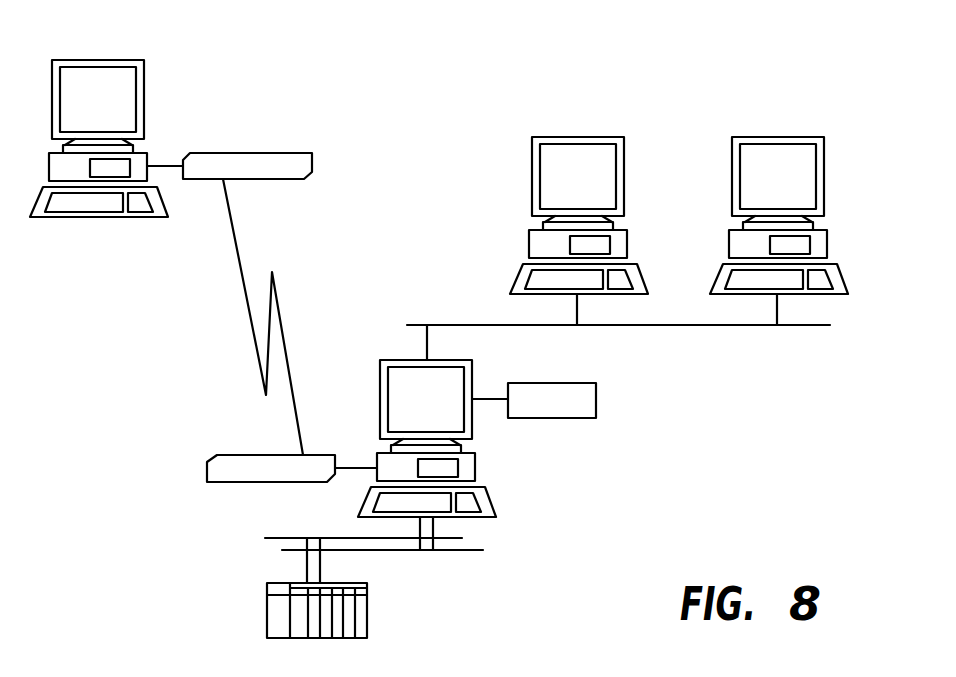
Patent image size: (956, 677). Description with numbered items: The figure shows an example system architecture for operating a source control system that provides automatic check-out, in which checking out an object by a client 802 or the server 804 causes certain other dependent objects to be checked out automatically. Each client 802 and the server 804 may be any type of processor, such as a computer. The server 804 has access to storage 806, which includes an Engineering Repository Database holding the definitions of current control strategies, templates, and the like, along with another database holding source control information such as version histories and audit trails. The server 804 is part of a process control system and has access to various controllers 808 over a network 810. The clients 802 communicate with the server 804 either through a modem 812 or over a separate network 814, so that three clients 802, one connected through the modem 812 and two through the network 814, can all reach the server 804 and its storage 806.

The client 802 is at (98, 60).
The server 804 is at (390, 360).
The storage 806 is at (577, 383).
The controllers 808 is at (367, 610).
The network 810 is at (285, 538).
The modem 812 is at (287, 153).
The network 814 is at (738, 325).